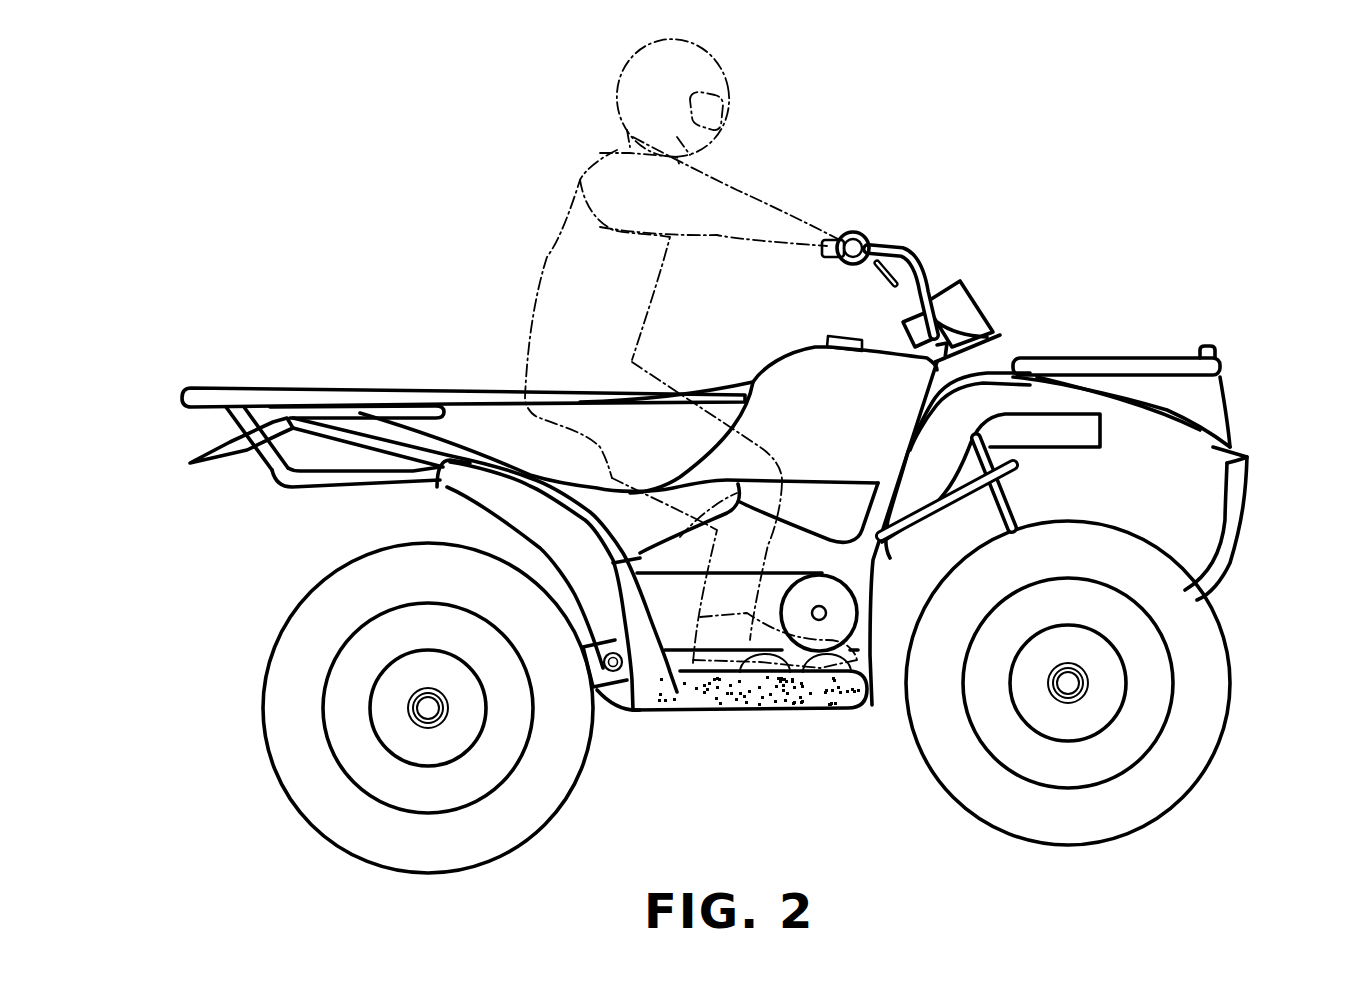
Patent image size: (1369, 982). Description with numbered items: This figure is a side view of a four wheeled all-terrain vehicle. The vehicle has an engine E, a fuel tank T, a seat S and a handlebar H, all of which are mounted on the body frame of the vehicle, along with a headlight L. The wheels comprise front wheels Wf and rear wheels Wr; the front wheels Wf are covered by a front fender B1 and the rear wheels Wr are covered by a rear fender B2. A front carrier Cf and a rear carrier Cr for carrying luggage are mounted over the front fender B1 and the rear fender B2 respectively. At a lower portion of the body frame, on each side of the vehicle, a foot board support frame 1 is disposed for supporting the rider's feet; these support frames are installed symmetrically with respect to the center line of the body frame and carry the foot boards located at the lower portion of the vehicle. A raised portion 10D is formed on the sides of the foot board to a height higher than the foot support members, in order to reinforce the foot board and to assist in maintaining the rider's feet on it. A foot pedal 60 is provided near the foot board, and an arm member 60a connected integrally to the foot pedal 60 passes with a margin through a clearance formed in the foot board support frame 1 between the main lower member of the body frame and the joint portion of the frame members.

The rear carrier Cr is at (257, 400).
The rear fender B2 is at (473, 480).
The seat S is at (505, 412).
The engine E is at (827, 575).
The fuel tank T is at (817, 390).
The handlebar H is at (884, 247).
The front fender B1 is at (993, 357).
The front carrier Cf is at (1118, 356).
The headlight L is at (1237, 403).
The rear wheel Wr is at (283, 690).
The front wheel Wf is at (1213, 655).
The arm member 60a is at (752, 708).
The raised portion 10D is at (777, 708).
The foot board support frame 1 is at (828, 708).
The foot pedal 60 is at (870, 708).